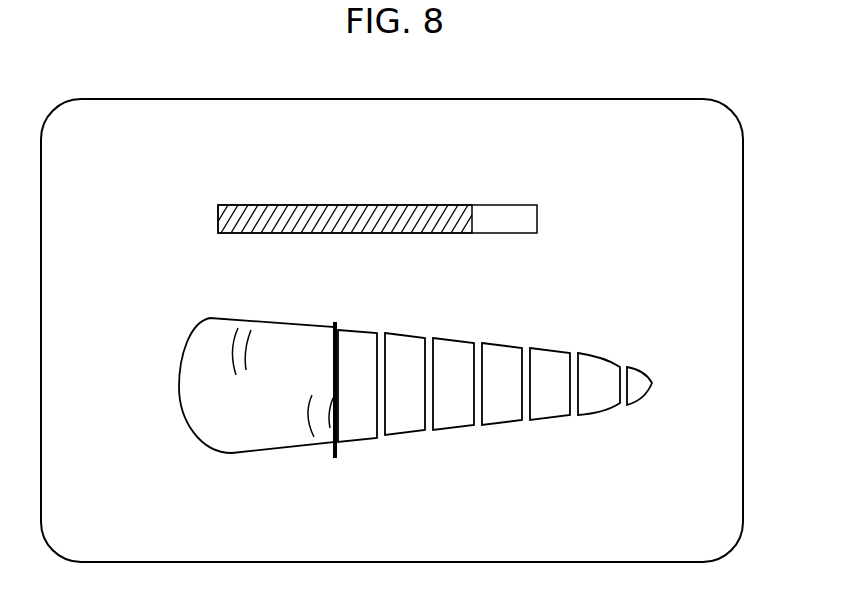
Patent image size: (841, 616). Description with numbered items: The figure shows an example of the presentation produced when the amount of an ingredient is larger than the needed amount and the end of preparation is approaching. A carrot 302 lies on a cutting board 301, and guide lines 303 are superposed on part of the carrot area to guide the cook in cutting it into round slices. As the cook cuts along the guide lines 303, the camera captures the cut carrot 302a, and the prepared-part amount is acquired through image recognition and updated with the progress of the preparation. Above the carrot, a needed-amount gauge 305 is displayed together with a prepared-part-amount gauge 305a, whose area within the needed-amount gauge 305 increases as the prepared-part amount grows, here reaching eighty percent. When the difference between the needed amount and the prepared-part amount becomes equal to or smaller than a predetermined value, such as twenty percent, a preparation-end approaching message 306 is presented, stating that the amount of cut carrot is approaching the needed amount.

The cutting board 301 is at (572, 99).
The carrot 302 is at (197, 433).
The cut carrot 302a is at (500, 427).
The guide lines 303 is at (338, 325).
The needed-amount gauge 305 is at (537, 210).
The prepared-part-amount gauge 305a is at (256, 228).
The preparation-end approaching message 306 is at (640, 245).